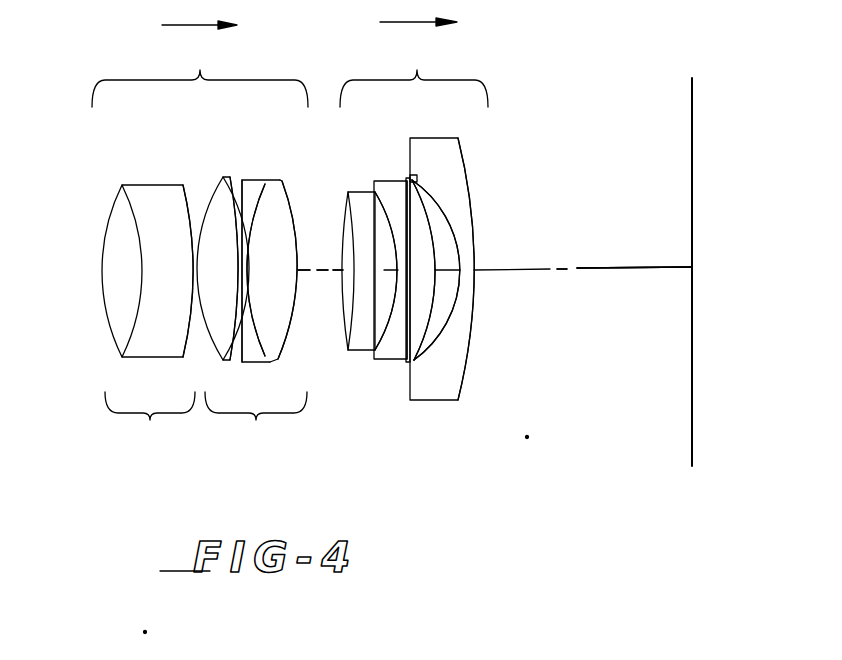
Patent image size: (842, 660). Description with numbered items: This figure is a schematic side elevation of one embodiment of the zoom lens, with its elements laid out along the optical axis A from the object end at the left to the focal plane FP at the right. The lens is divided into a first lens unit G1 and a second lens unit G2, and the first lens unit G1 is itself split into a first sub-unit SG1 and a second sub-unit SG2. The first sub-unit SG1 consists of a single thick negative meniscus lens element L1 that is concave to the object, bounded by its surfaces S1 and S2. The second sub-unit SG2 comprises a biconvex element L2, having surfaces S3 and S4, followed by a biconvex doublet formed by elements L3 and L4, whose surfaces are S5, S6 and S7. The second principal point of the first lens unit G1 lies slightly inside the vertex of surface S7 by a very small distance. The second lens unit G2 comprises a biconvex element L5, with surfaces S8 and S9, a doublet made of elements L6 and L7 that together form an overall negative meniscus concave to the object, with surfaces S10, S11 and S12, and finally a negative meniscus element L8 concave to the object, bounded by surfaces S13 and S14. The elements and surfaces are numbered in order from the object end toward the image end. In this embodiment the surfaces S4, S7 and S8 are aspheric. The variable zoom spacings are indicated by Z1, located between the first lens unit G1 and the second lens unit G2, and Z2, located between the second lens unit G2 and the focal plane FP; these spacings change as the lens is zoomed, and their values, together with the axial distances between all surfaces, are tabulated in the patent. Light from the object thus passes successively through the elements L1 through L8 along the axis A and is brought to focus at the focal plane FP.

The lens element L1 is at (153, 183).
The biconvex element L2 is at (227, 177).
The biconvex doublet element L3 is at (253, 180).
The biconvex doublet element L4 is at (280, 184).
The biconvex element L5 is at (358, 190).
The doublet element L6 is at (389, 178).
The doublet element L7 is at (413, 177).
The negative meniscus element L8 is at (523, 122).
The lens surface S1 is at (137, 305).
The lens surface S2 is at (189, 328).
The lens surface S3 is at (203, 340).
The aspheric lens surface S4 is at (238, 333).
The lens surface S5 is at (240, 358).
The lens surface S6 is at (262, 332).
The aspheric lens surface S7 is at (293, 320).
The aspheric lens surface S8 is at (343, 322).
The lens surface S9 is at (386, 290).
The lens surface S10 is at (385, 357).
The lens surface S11 is at (413, 230).
The lens surface S12 is at (436, 255).
The lens surface S13 is at (460, 302).
The lens surface S14 is at (468, 361).
The first lens unit G1 is at (200, 78).
The second lens unit G2 is at (414, 77).
The first sub-unit SG1 is at (150, 420).
The second sub-unit SG2 is at (256, 420).
The variable zoom spacing Z1 is at (320, 259).
The variable zoom spacing Z2 is at (624, 256).
The optical axis A is at (647, 261).
The focal plane FP is at (692, 202).